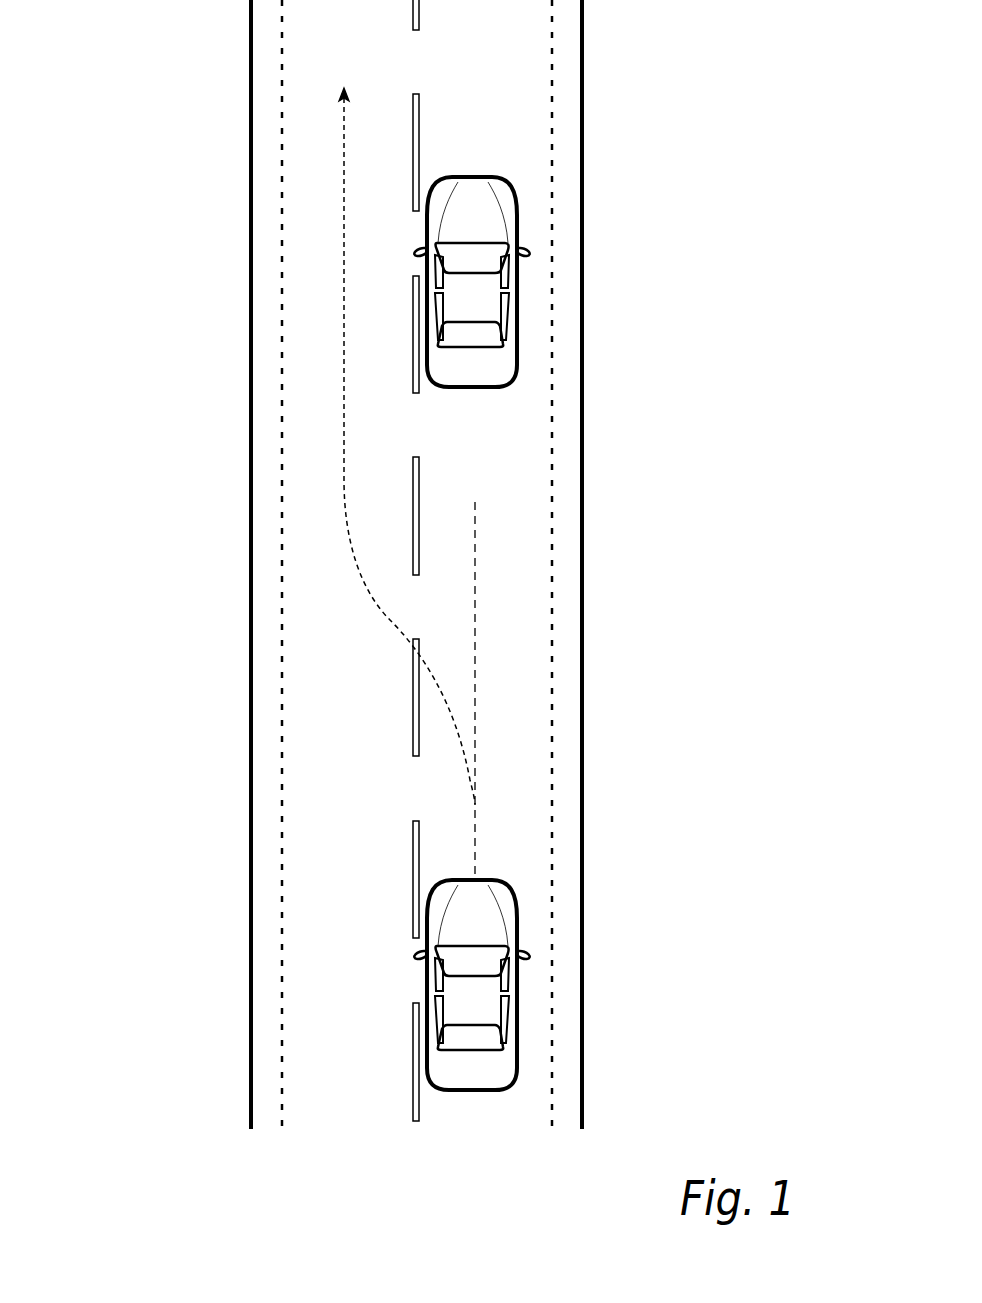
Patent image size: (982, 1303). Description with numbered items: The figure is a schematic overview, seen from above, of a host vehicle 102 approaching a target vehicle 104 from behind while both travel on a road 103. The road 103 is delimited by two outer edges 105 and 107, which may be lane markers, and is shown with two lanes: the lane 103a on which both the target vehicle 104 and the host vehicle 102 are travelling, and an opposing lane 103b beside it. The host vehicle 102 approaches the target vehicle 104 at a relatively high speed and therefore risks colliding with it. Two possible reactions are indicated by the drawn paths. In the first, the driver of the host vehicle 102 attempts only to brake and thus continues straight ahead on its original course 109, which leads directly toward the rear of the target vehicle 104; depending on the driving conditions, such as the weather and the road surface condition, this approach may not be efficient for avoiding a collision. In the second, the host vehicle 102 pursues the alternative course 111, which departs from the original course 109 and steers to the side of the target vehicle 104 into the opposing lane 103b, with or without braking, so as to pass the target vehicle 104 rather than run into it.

The host vehicle 102 is at (530, 933).
The road 103 is at (525, 806).
The lane 103a is at (513, 735).
The opposing lane 103b is at (308, 163).
The target vehicle 104 is at (530, 270).
The outer edge 105 is at (250, 405).
The outer edge 107 is at (583, 110).
The original course 109 is at (477, 622).
The course 111 is at (393, 620).